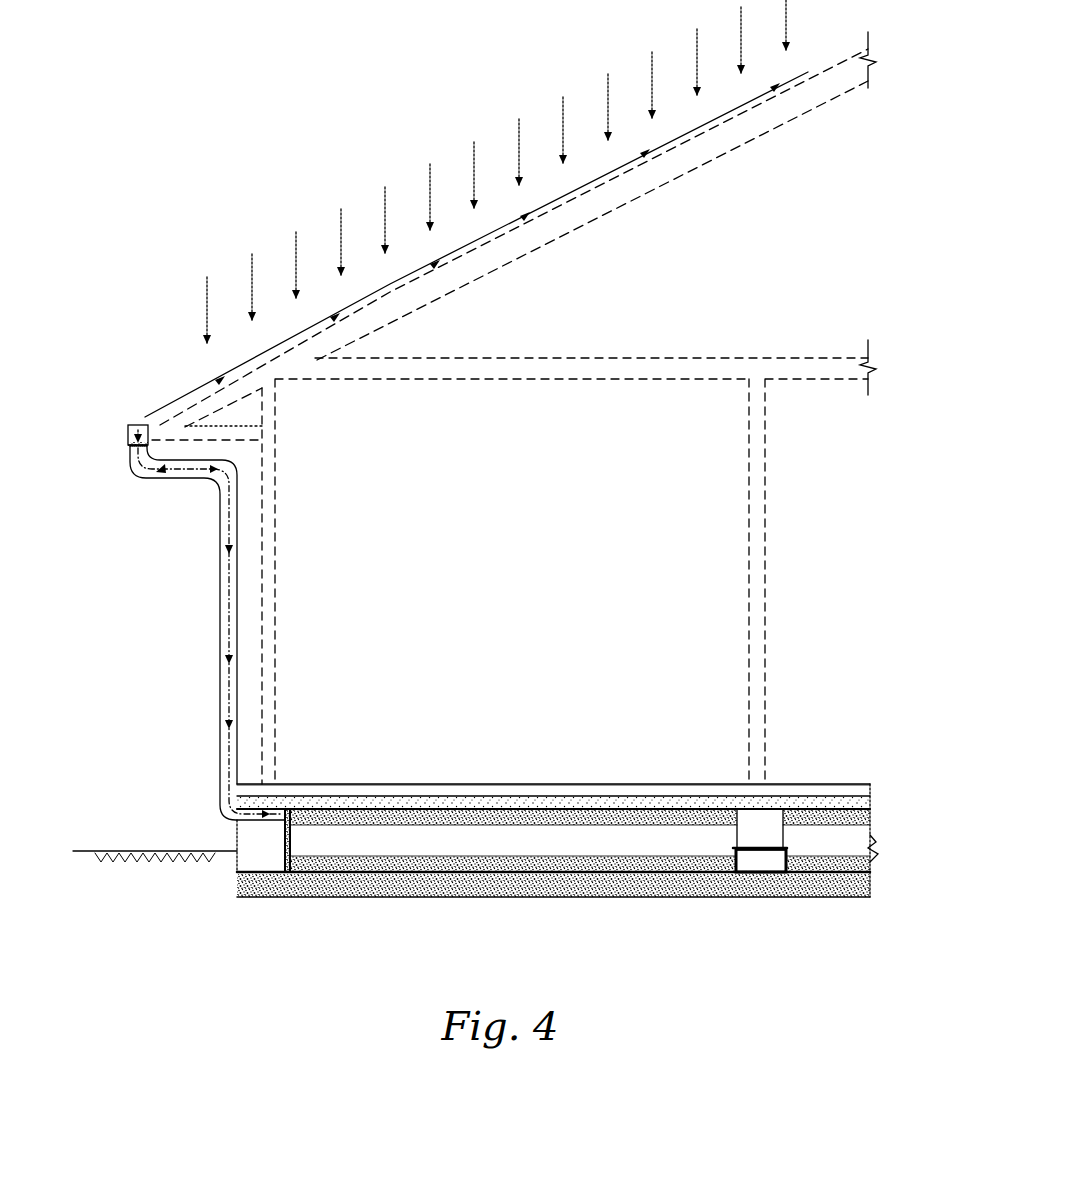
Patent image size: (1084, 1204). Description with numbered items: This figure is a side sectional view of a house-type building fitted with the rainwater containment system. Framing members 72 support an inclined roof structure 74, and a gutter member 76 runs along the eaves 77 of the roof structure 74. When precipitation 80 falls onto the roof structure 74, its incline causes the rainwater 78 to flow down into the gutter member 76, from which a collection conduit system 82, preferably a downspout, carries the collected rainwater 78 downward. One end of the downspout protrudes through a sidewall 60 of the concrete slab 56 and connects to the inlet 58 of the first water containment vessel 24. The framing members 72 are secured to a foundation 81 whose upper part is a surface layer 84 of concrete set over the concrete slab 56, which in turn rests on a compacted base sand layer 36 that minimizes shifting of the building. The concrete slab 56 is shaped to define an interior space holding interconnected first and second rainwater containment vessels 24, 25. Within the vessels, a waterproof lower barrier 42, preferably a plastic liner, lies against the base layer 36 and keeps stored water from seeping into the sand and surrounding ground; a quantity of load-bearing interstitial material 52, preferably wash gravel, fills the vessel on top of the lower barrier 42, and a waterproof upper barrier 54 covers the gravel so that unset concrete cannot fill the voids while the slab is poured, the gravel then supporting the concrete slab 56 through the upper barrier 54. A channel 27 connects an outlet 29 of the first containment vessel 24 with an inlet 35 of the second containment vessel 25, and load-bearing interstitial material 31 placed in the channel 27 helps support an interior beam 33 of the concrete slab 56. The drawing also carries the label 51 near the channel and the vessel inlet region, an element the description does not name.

The first rainwater containment vessel 24 is at (570, 850).
The second containment vessel 25 is at (828, 856).
The channel 27 is at (760, 828).
The outlet 29 is at (734, 850).
The load-bearing interstitial material 31 is at (776, 836).
The interior beam 33 is at (772, 808).
The inlet 35 is at (790, 855).
The compacted sand base layer 36 is at (288, 898).
The waterproof lower barrier 42 is at (346, 897).
The drain basin 51 is at (258, 905).
The load-bearing interstitial material 52 is at (478, 852).
The waterproof upper barrier 54 is at (308, 812).
The concrete slab 56 is at (566, 800).
The inlet 58 is at (282, 816).
The sidewall 60 is at (238, 862).
The framing members 72 is at (775, 118).
The inclined roof structure 74 is at (820, 70).
The gutter member 76 is at (130, 432).
The eaves 77 is at (160, 441).
The rainwater 78 is at (704, 128).
The precipitation 80 is at (478, 150).
The foundation 81 is at (392, 772).
The collection conduit system 82 is at (148, 472).
The surface layer 84 is at (512, 784).